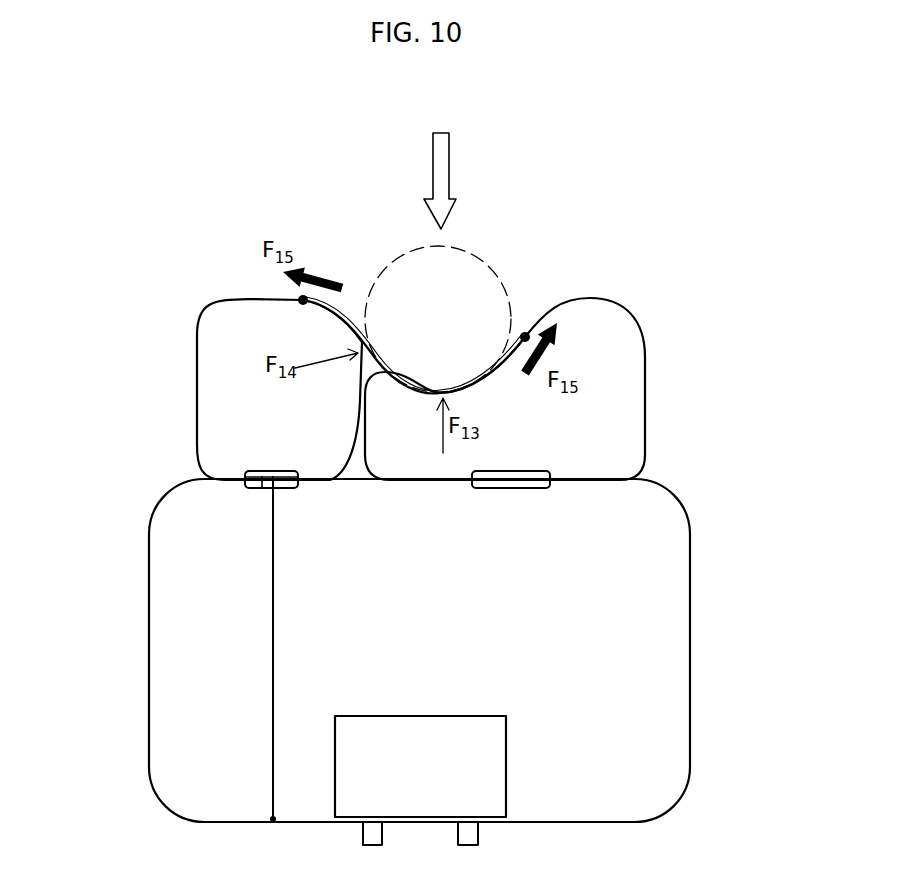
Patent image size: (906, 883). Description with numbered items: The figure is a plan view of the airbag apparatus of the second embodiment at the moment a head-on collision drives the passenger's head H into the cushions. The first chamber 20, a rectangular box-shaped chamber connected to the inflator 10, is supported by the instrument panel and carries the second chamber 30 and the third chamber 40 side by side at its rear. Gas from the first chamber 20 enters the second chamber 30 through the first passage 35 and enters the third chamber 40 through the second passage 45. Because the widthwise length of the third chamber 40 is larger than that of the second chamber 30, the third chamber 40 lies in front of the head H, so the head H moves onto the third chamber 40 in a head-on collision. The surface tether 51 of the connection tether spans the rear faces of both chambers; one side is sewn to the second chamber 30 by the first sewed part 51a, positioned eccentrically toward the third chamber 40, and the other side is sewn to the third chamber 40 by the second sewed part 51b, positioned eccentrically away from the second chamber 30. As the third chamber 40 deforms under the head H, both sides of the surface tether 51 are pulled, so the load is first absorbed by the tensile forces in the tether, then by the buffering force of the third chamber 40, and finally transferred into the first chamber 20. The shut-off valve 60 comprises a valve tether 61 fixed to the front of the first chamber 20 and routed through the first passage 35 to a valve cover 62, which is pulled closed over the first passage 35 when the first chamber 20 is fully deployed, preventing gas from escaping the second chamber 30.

The inflator 10 is at (475, 787).
The first chamber 20 is at (690, 580).
The second chamber 30 is at (197, 366).
The first passage 35 is at (270, 471).
The third chamber 40 is at (645, 376).
The second passage 45 is at (527, 488).
The surface tether 51 is at (378, 362).
The first sewed part 51a is at (300, 299).
The second sewed part 51b is at (527, 332).
The shut-off valve 60 is at (158, 649).
The valve tether 61 is at (273, 667).
The valve cover 62 is at (258, 487).
The head H is at (482, 253).